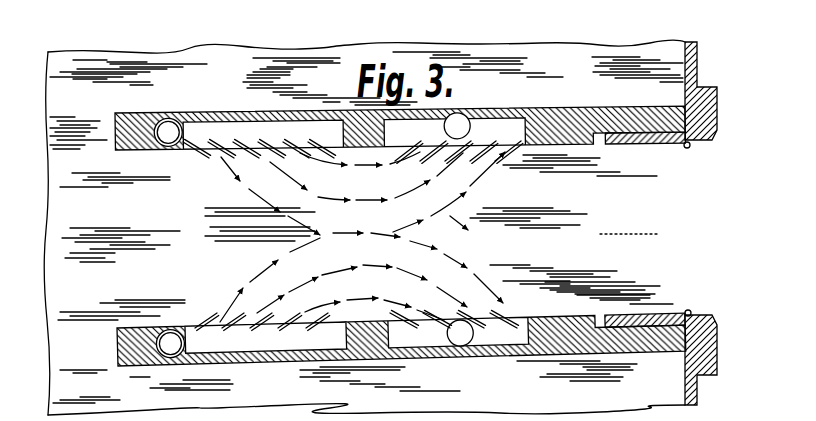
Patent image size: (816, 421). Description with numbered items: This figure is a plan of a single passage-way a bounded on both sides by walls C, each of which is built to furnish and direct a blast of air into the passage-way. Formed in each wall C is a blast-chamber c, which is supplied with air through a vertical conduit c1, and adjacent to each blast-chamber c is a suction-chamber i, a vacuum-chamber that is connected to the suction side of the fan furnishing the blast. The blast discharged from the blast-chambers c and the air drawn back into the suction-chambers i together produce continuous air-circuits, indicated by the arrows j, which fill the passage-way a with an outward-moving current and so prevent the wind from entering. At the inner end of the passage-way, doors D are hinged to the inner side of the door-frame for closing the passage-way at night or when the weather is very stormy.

The wall C is at (115, 130).
The vertical conduit c1 is at (168, 118).
The blast-chamber c is at (353, 234).
The suction-chamber i is at (483, 130).
The arrows j is at (462, 266).
The passage-way a is at (364, 227).
The door D is at (650, 144).